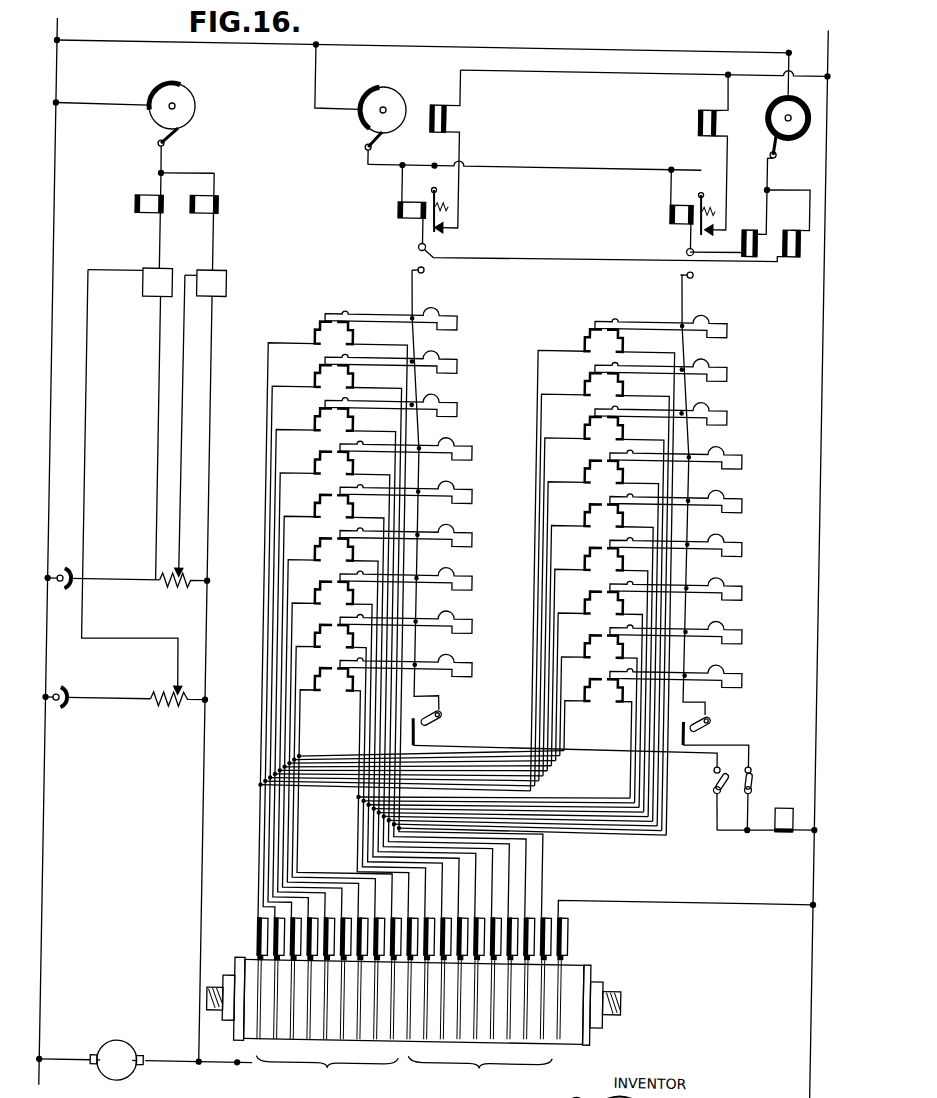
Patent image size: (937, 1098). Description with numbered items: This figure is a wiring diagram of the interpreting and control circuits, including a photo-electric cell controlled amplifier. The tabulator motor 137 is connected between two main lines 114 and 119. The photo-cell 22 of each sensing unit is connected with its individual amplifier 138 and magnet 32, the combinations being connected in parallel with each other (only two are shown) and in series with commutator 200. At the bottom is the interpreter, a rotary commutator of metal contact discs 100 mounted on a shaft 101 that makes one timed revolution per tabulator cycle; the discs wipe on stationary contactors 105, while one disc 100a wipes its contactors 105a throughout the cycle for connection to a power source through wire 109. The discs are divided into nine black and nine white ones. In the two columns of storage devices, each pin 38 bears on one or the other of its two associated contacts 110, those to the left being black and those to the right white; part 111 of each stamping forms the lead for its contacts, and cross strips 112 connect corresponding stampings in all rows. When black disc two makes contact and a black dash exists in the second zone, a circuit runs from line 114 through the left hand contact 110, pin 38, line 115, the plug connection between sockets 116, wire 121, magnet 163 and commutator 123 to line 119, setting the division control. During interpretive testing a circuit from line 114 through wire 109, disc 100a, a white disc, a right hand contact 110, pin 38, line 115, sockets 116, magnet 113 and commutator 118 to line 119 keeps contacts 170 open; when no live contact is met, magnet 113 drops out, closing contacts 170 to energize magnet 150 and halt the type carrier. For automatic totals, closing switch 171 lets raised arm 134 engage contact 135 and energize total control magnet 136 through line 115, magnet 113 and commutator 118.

The commutator 200 is at (198, 100).
The magnet 32 is at (161, 199).
The main line 119 is at (57, 245).
The amplifier 138 is at (147, 286).
The photo-cell 22 is at (141, 349).
The tabulator motor 137 is at (148, 1045).
The commutator 118 is at (369, 96).
The wire 121 is at (534, 250).
The magnet of the tabulator 150 is at (446, 111).
The magnet 113 is at (418, 201).
The contacts 170 is at (438, 225).
The sockets 116 is at (422, 241).
The commutator 123 is at (806, 124).
The magnet 163 is at (759, 228).
The line 115 is at (416, 281).
The pin 38 is at (391, 354).
The contacts 110 is at (326, 360).
The cross strips 112 is at (345, 770).
The contact stamping 111 is at (331, 690).
The arm 134 is at (457, 711).
The contact 135 is at (432, 734).
The switch 171 is at (765, 763).
The automatic total control magnet 136 is at (797, 796).
The main line 114 is at (826, 575).
The wire 109 is at (712, 894).
The contactors 105 is at (278, 934).
The contactors 105a is at (576, 926).
The contact discs 100 is at (308, 1024).
The disc 100a is at (582, 1034).
The shaft 101 is at (627, 988).